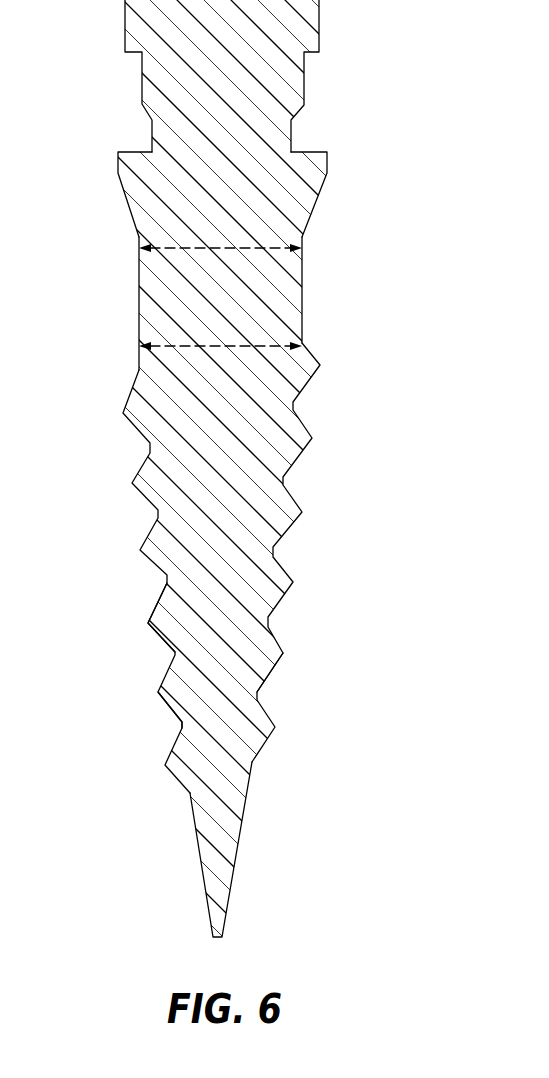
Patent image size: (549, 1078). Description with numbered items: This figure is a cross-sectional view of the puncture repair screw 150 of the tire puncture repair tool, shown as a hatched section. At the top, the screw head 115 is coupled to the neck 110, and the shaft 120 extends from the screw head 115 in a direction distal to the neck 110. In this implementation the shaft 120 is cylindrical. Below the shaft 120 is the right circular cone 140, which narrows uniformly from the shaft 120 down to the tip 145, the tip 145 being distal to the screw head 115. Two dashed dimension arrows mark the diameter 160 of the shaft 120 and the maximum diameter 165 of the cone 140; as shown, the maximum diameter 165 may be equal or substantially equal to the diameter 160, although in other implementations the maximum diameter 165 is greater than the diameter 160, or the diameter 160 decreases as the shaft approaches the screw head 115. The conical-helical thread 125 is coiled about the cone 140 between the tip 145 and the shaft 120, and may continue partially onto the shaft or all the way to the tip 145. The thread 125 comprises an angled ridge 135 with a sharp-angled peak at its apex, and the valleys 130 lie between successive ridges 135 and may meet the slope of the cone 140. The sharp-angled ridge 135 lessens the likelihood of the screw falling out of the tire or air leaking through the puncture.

The neck 110 is at (292, 128).
The screw head 115 is at (327, 165).
The shaft 120 is at (285, 285).
The screw thread 125 is at (280, 672).
The valleys 130 is at (182, 725).
The ridge 135 is at (148, 626).
The right circular cone 140 is at (220, 545).
The tip 145 is at (213, 937).
The puncture repair screw 150 is at (274, 475).
The diameter of the shaft 160 is at (247, 242).
The maximum diameter of the cone 165 is at (183, 343).